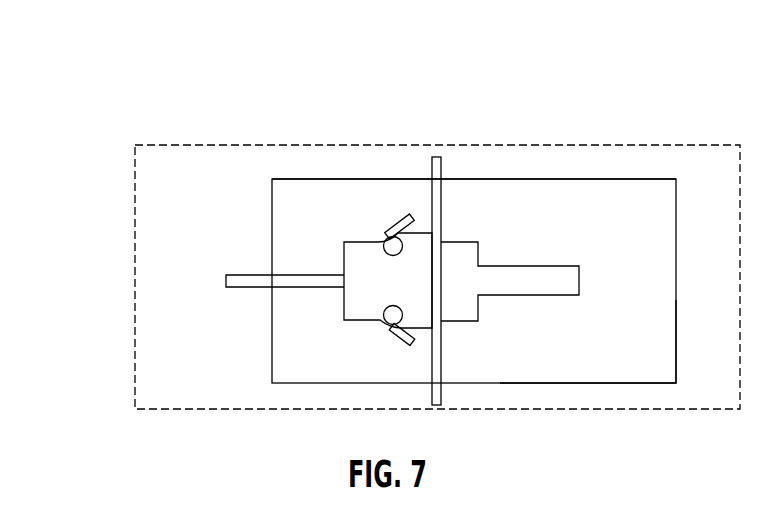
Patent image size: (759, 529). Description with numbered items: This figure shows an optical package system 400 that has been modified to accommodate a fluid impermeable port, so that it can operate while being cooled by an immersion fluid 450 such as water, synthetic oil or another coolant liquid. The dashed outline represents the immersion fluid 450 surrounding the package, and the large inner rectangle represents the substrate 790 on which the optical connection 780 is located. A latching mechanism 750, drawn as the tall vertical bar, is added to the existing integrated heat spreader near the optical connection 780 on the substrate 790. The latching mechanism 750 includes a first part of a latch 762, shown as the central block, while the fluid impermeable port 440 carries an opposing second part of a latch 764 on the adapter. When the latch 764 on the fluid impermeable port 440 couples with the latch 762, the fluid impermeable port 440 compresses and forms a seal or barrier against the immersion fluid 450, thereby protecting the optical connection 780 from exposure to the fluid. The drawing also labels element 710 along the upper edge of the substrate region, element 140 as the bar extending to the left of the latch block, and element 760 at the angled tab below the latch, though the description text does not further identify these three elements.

The optical package system 400 is at (114, 99).
The immersion fluid 450 is at (172, 145).
The fluid impermeable port 440 is at (283, 208).
The top surface 710 is at (358, 178).
The latching mechanism 750 is at (438, 150).
The shaft 140 is at (247, 283).
The first part of a latch 762 is at (417, 330).
The second part of a latch 764 is at (389, 326).
The latch tab 760 is at (396, 350).
The optical connection 780 is at (467, 310).
The substrate 790 is at (575, 375).